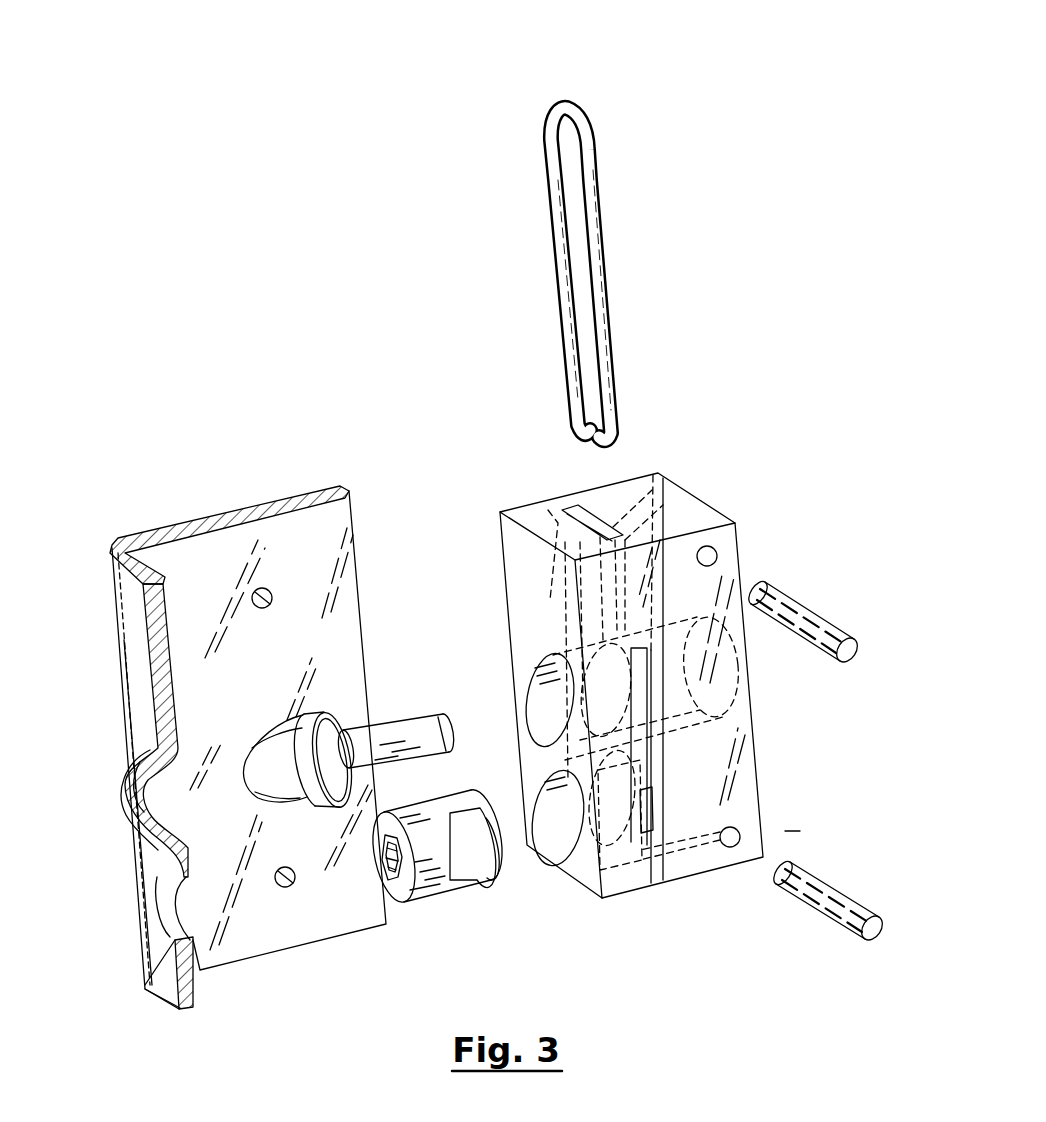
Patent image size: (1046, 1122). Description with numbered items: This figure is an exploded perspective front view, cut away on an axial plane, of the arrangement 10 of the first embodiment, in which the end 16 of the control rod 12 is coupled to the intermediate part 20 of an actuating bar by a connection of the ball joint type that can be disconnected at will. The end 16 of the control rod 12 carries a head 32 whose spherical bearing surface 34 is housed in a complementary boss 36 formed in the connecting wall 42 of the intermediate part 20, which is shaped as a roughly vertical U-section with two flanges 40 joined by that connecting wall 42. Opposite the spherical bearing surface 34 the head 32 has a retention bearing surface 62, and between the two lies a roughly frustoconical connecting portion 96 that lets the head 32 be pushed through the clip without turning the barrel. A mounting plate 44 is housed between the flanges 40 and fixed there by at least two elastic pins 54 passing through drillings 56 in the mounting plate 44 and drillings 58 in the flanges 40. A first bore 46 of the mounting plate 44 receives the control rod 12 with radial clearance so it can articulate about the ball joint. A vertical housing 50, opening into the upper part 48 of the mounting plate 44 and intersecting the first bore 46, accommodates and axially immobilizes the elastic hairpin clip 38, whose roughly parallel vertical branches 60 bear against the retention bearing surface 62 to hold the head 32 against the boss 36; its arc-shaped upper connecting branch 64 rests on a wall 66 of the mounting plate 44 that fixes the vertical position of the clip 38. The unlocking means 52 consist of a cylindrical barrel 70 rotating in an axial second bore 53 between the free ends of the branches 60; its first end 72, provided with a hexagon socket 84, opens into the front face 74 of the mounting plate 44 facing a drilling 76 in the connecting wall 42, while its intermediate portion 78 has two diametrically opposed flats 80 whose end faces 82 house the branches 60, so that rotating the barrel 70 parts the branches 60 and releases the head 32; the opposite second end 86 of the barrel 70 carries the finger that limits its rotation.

The arrangement 10 is at (707, 200).
The control rod 12 is at (334, 742).
The end of the control rod 16 is at (377, 733).
The intermediate part of the actuating bar 20 is at (110, 582).
The head 32 is at (284, 779).
The spherical bearing surface 34 is at (266, 774).
The boss 36 is at (148, 808).
The elastic clip 38 is at (585, 252).
The flanges 40 is at (290, 537).
The connecting wall 42 is at (137, 681).
The mounting plate 44 is at (626, 673).
The first bore 46 is at (540, 718).
The upper part of the mounting plate 48 is at (600, 500).
The vertical housing 50 is at (548, 510).
The unlocking means 52 is at (430, 858).
The second bore 53 is at (560, 862).
The elastic pins 54 is at (822, 630).
The drillings in the mounting plate 56 is at (717, 555).
The drillings in the flanges 58 is at (272, 607).
The vertical branches 60 is at (603, 352).
The retention bearing surface 62 is at (363, 722).
The upper connecting branch 64 is at (575, 117).
The wall 66 is at (652, 471).
The cylindrical barrel 70 is at (435, 852).
The first end of the barrel 72 is at (391, 903).
The front face of the mounting plate 74 is at (517, 565).
The drilling 76 is at (160, 940).
The intermediate portion 78 is at (457, 804).
The flats 80 is at (478, 887).
The end faces 82 is at (473, 823).
The hexagon socket 84 is at (393, 860).
The second end of the barrel 86 is at (505, 862).
The frustoconical connecting portion 96 is at (304, 728).